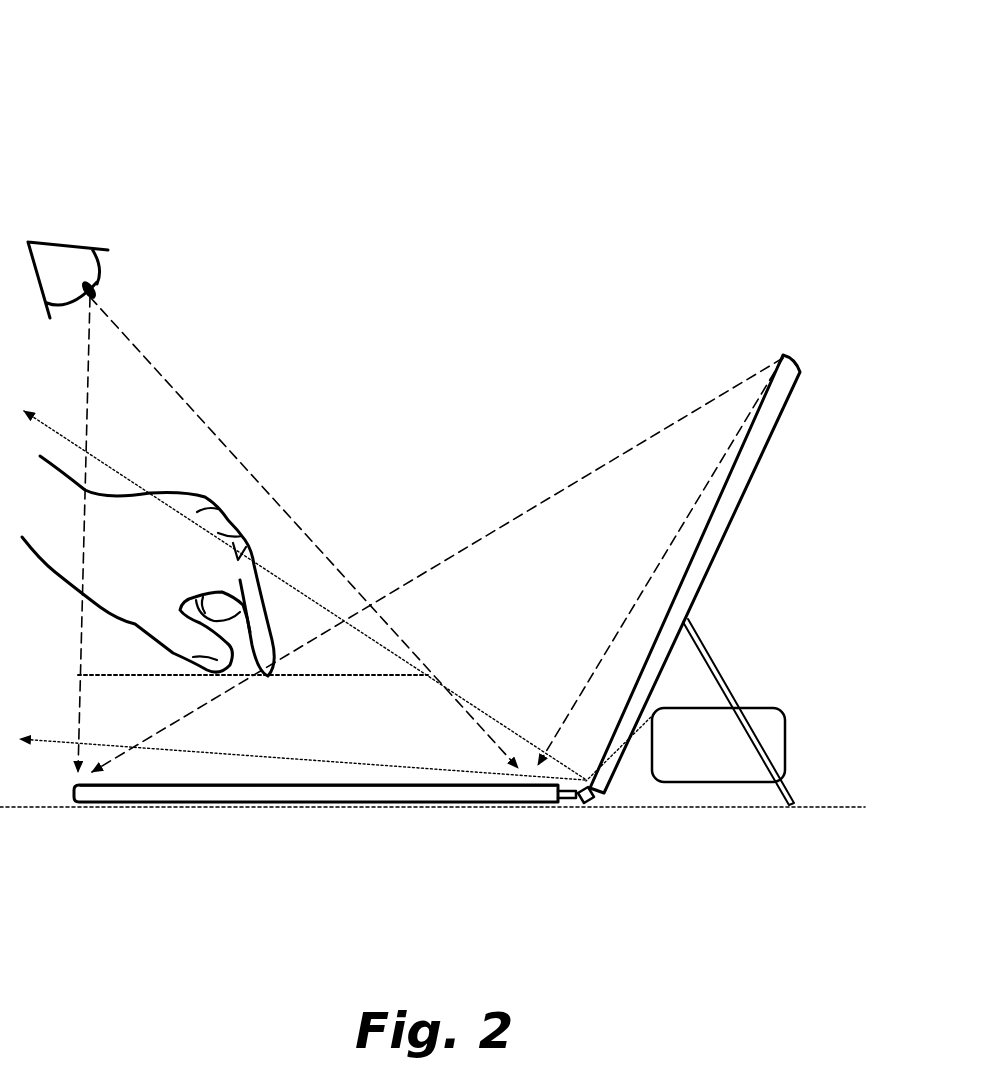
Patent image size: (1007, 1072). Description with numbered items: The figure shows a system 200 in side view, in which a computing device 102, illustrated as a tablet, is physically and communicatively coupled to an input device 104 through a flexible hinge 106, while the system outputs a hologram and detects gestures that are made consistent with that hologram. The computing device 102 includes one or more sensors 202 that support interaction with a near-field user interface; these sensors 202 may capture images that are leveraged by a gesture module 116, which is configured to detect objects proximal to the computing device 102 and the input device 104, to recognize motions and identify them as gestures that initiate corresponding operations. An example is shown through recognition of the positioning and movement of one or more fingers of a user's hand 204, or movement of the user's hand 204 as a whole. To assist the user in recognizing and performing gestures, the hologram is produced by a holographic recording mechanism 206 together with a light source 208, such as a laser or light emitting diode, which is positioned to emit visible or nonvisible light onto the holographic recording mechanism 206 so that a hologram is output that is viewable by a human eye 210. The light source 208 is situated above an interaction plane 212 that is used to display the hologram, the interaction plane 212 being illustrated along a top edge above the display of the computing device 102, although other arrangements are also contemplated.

The system 200 is at (158, 62).
The human eye 210 is at (68, 241).
The user's hand 204 is at (148, 566).
The interaction plane 212 is at (173, 677).
The light source 208 is at (783, 352).
The computing device 102 is at (703, 565).
The input device 104 is at (363, 803).
The holographic recording mechanism 206 is at (442, 785).
The sensors 202 is at (588, 792).
The flexible hinge 106 is at (565, 826).
The gesture module 116 is at (685, 745).